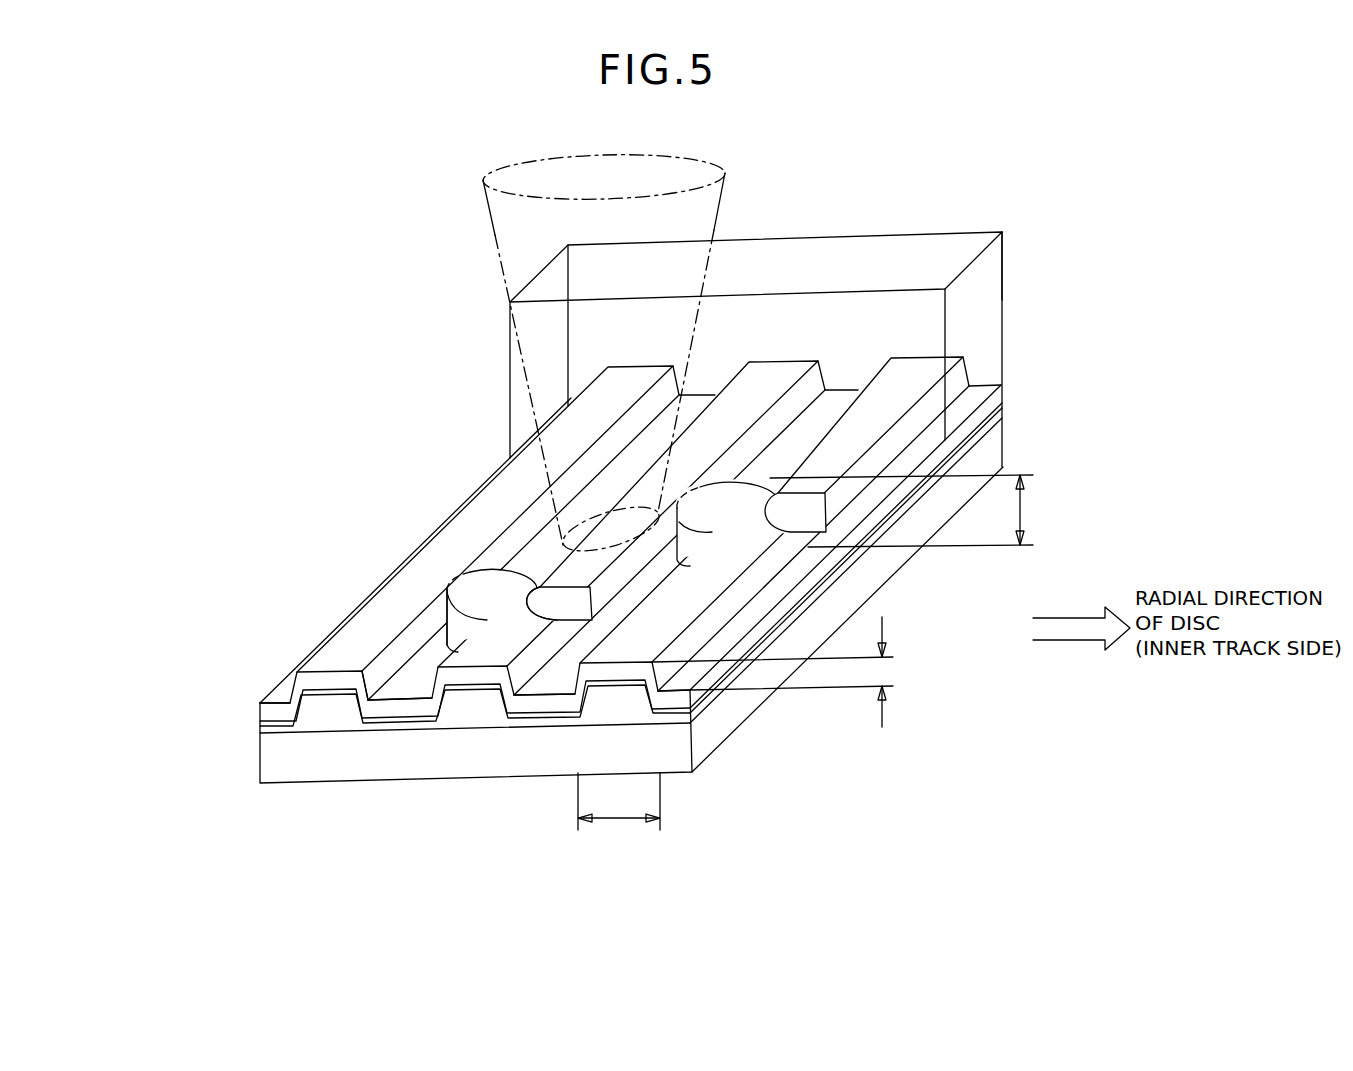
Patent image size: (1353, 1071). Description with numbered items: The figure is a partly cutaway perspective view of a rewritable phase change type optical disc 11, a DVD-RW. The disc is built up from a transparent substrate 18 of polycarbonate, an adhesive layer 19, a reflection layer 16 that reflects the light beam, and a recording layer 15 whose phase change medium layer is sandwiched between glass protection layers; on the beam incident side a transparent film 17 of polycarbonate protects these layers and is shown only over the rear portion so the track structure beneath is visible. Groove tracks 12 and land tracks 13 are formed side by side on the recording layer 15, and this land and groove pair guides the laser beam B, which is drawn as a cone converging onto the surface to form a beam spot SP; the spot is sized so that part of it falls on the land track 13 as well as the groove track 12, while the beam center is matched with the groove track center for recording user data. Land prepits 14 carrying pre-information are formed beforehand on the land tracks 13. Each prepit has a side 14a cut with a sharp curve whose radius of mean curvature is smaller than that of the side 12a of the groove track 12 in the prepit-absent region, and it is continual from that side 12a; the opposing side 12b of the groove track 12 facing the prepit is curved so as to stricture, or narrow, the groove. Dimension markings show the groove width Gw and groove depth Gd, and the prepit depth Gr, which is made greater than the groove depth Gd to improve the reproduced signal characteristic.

The optical disc 11 is at (1023, 237).
The groove track 12 is at (332, 658).
The side of groove track 12a is at (400, 655).
The side of groove track facing land prepit 12b is at (563, 605).
The land track 13 is at (281, 692).
The land prepit 14 is at (594, 518).
The side of land prepit 14a is at (482, 663).
The recording layer 15 is at (1003, 395).
The reflection layer 16 is at (1003, 408).
The transparent film 17 is at (988, 307).
The transparent substrate 18 is at (1003, 448).
The adhesive layer 19 is at (1003, 420).
The laser beam B is at (483, 180).
The beam spot SP is at (611, 529).
The depth of land prepit Gr is at (912, 511).
The depth of groove track Gd is at (785, 672).
The width of groove track Gw is at (619, 812).